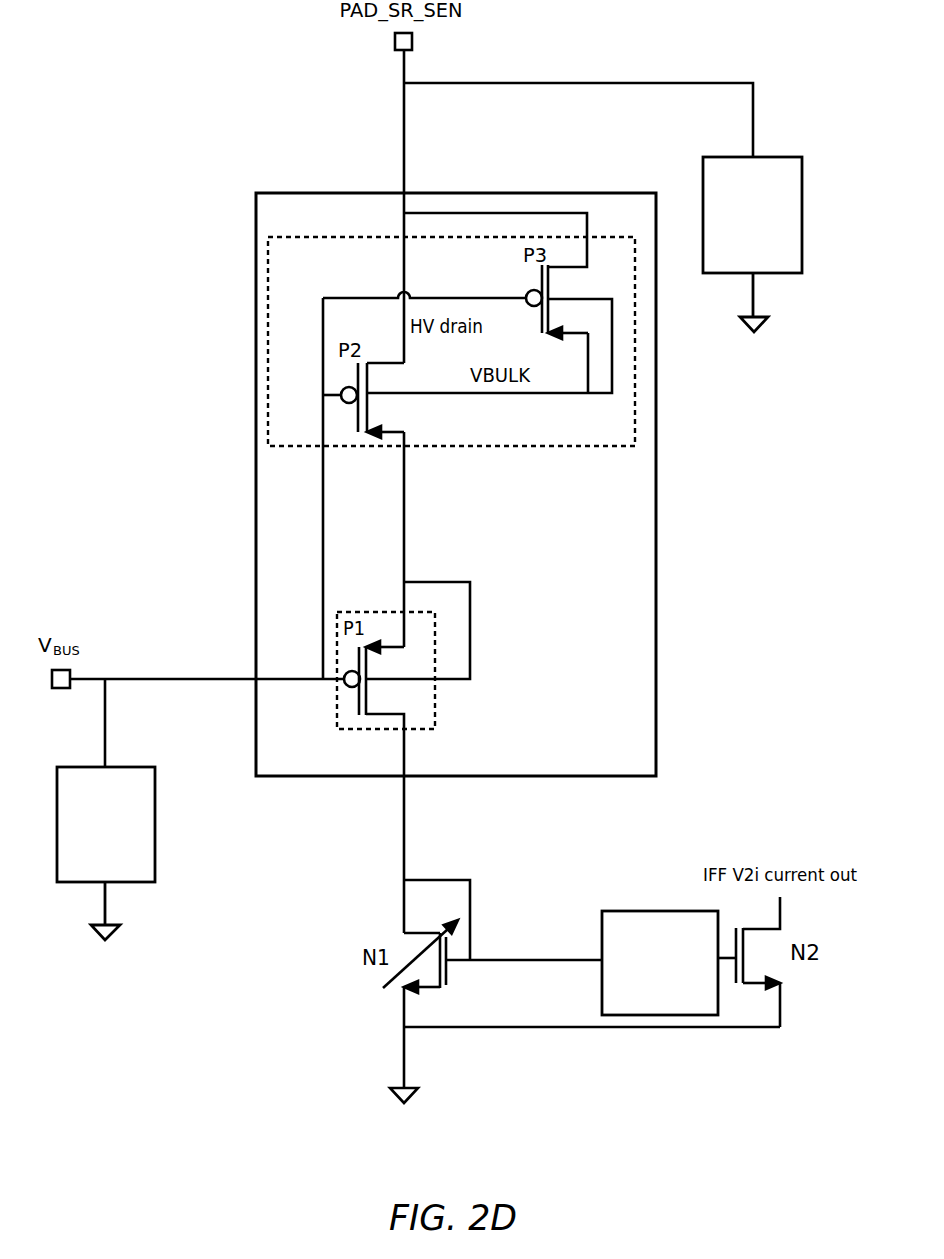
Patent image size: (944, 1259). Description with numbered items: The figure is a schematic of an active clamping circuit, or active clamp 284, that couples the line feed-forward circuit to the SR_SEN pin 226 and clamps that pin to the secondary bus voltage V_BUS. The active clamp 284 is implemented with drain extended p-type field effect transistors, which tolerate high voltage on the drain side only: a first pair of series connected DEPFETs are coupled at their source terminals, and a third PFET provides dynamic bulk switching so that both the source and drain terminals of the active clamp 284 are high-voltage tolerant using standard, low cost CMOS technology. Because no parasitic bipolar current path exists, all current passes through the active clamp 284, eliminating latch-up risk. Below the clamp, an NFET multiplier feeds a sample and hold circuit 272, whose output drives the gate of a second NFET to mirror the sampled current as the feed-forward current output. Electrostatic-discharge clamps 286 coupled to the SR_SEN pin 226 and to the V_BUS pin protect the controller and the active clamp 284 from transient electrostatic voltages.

The SR_SEN pin 226 is at (412, 41).
The electrostatic-discharge (ESD) clamps 286 is at (802, 211).
The active clamp 284 is at (642, 763).
The sample and hold (S/H) circuit 272 is at (643, 986).